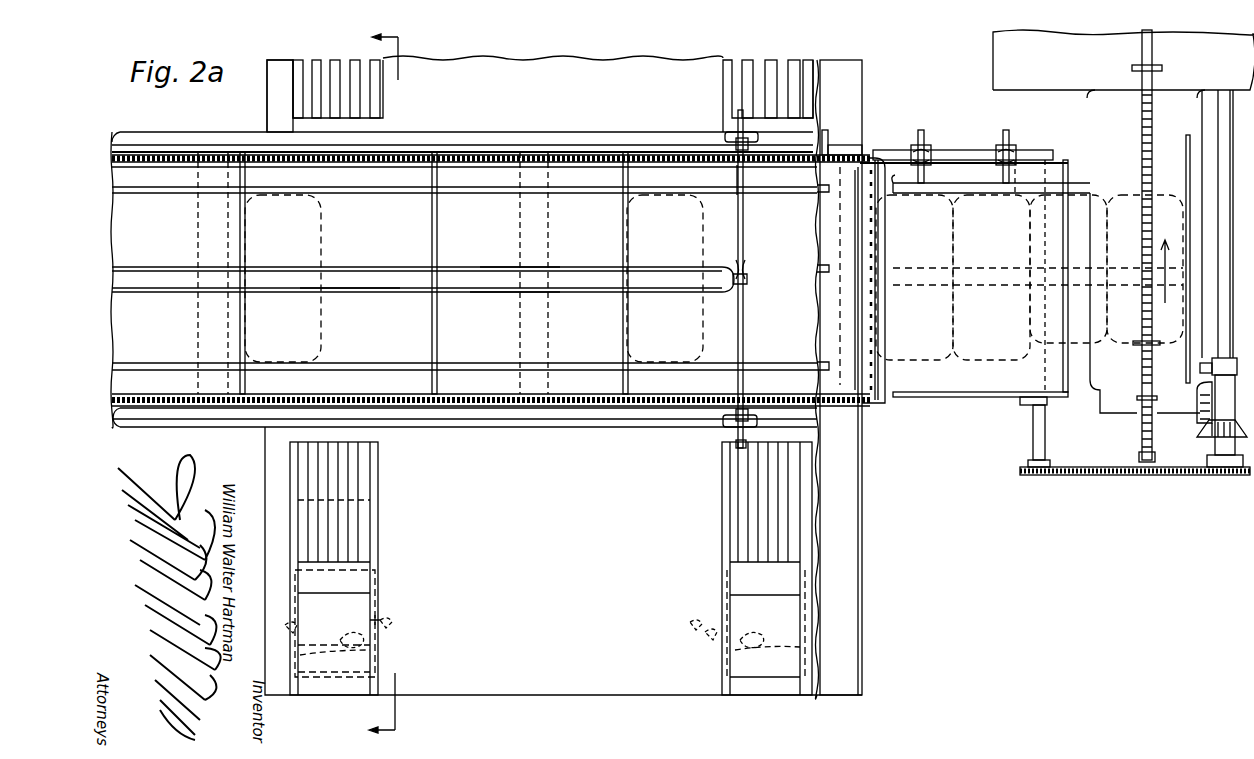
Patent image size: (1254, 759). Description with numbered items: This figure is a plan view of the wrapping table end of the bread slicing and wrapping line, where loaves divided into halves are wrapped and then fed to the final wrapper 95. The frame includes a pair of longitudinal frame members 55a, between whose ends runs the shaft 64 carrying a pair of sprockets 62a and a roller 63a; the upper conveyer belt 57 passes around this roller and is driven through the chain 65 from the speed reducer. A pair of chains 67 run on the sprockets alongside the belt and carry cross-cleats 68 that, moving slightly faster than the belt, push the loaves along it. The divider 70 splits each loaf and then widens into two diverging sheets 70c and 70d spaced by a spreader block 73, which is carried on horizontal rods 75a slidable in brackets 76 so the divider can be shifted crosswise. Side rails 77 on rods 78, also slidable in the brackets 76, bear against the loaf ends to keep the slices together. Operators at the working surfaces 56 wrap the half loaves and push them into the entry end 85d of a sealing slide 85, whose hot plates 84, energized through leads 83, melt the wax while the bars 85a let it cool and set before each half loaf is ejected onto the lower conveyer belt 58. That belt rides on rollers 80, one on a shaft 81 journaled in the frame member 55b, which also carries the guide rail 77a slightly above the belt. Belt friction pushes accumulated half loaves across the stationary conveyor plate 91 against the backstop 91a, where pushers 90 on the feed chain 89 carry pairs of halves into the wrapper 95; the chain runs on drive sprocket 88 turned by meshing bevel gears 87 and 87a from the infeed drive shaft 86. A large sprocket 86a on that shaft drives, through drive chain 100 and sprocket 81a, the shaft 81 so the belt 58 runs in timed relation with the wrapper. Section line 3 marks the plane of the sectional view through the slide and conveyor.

The section line 3- 3 is at (396, 388).
The longitudinal frame members 55a is at (592, 168).
The frame member 55b is at (1044, 150).
The working surface or table portions 56 is at (563, 377).
The upper conveyer belt 57 is at (329, 280).
The lower conveyer belt 58 is at (976, 402).
The sprockets 62a is at (872, 153).
The roller 63a is at (840, 215).
The shaft 64 is at (860, 140).
The chain 65 is at (383, 95).
The chains 67 is at (600, 162).
The cross-cleats 68 is at (245, 239).
The divider 70 is at (356, 261).
The sheet 70c is at (478, 292).
The sheet 70d is at (500, 265).
The spreader block 73 is at (360, 294).
The horizontal rods 75a is at (744, 335).
The brackets 76 is at (732, 132).
The side rails or guides 77 is at (482, 188).
The guide rail 77a is at (973, 185).
The horizontally extending rods 78 is at (737, 175).
The rollers 80 is at (1028, 402).
The shaft 81 is at (1033, 444).
The sprocket 81a is at (1035, 476).
The leads 83 is at (390, 622).
The hot plates 84 is at (363, 660).
The sealing slide 85 is at (540, 377).
The bars 85a is at (355, 63).
The entry end 85d is at (328, 695).
The infeed drive shaft 86 is at (1210, 120).
The large sprocket 86a is at (1215, 475).
The bevel gear 87 is at (1202, 380).
The bevel gear 87a is at (1202, 408).
The drive sprocket 88 is at (1156, 446).
The feed chain 89 is at (1137, 398).
The pushers 90 is at (1162, 68).
The stationary conveyor plate 91 is at (1098, 400).
The backstop 91a is at (1185, 170).
The wrapper 95 is at (1013, 68).
The drive chain 100 is at (1103, 476).